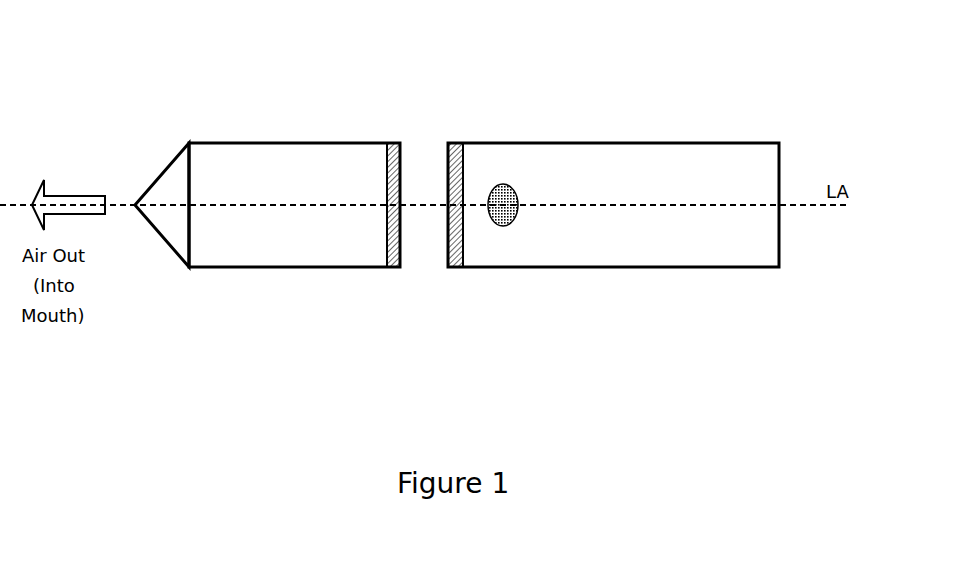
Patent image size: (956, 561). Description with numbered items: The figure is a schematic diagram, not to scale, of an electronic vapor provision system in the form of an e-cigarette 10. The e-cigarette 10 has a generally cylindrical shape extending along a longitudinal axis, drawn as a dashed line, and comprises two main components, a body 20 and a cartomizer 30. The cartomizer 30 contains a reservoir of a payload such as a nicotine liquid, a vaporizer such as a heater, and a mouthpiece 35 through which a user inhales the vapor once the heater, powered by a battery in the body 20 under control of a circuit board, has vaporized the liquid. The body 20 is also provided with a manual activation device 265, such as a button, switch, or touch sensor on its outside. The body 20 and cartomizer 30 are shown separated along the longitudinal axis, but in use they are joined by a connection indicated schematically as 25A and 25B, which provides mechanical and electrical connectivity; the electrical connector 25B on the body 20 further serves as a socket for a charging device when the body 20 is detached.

The e-cigarette 10 is at (172, 371).
The body 20 is at (636, 249).
The connection 25A is at (350, 251).
The electrical connector 25B is at (603, 143).
The cartomizer 30 is at (294, 168).
The mouthpiece 35 is at (125, 160).
The manual activation device 265 is at (552, 280).